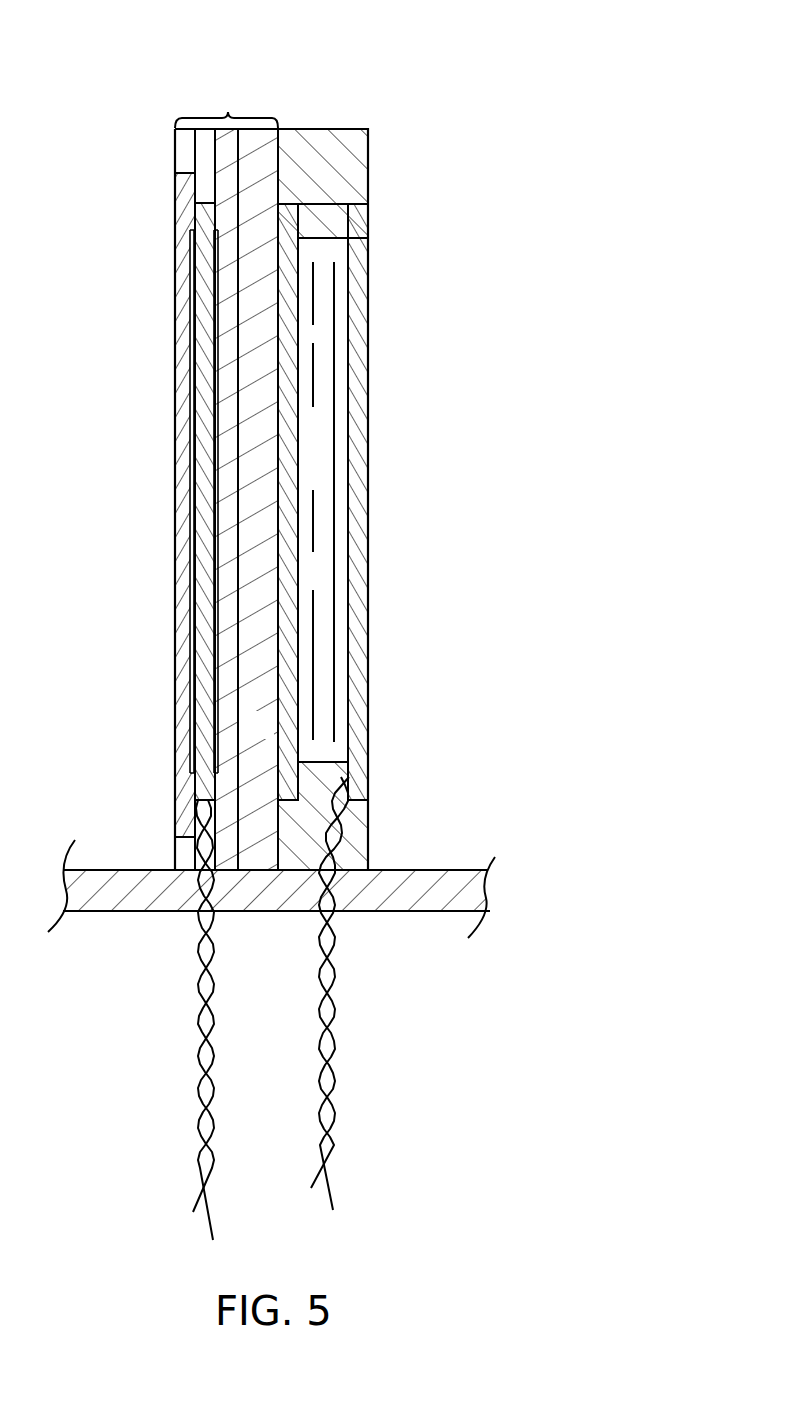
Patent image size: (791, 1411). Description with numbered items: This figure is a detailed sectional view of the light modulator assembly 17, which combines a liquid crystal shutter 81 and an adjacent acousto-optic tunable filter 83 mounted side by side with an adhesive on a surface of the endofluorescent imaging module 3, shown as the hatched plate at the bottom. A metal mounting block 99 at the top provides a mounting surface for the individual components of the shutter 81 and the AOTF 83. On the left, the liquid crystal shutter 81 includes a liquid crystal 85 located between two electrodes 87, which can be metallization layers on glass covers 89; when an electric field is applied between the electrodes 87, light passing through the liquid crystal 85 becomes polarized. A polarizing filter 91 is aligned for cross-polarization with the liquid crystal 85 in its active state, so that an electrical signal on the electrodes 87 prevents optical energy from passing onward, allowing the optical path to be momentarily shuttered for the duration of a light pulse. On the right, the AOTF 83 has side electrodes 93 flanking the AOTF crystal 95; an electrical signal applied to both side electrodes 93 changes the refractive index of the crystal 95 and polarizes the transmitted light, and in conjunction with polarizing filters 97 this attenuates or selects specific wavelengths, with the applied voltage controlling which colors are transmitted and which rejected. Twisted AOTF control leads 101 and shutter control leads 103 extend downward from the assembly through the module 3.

The endofluorescent imaging module 3 is at (113, 912).
The light modulator assembly 17 is at (343, 40).
The liquid crystal shutter 81 is at (228, 114).
The acousto-optic tunable filter (AOTF) 83 is at (368, 165).
The liquid crystal 85 is at (198, 408).
The electrodes 87 is at (210, 517).
The glass covers 89 is at (175, 803).
The polarizing filter 91 is at (272, 736).
The side electrodes 93 is at (300, 248).
The AOTF crystal 95 is at (315, 518).
The polarizing filters 97 is at (368, 698).
The metal mounting block 99 is at (319, 160).
The AOTF control leads 101 is at (335, 1103).
The shutter control leads 103 is at (198, 1133).